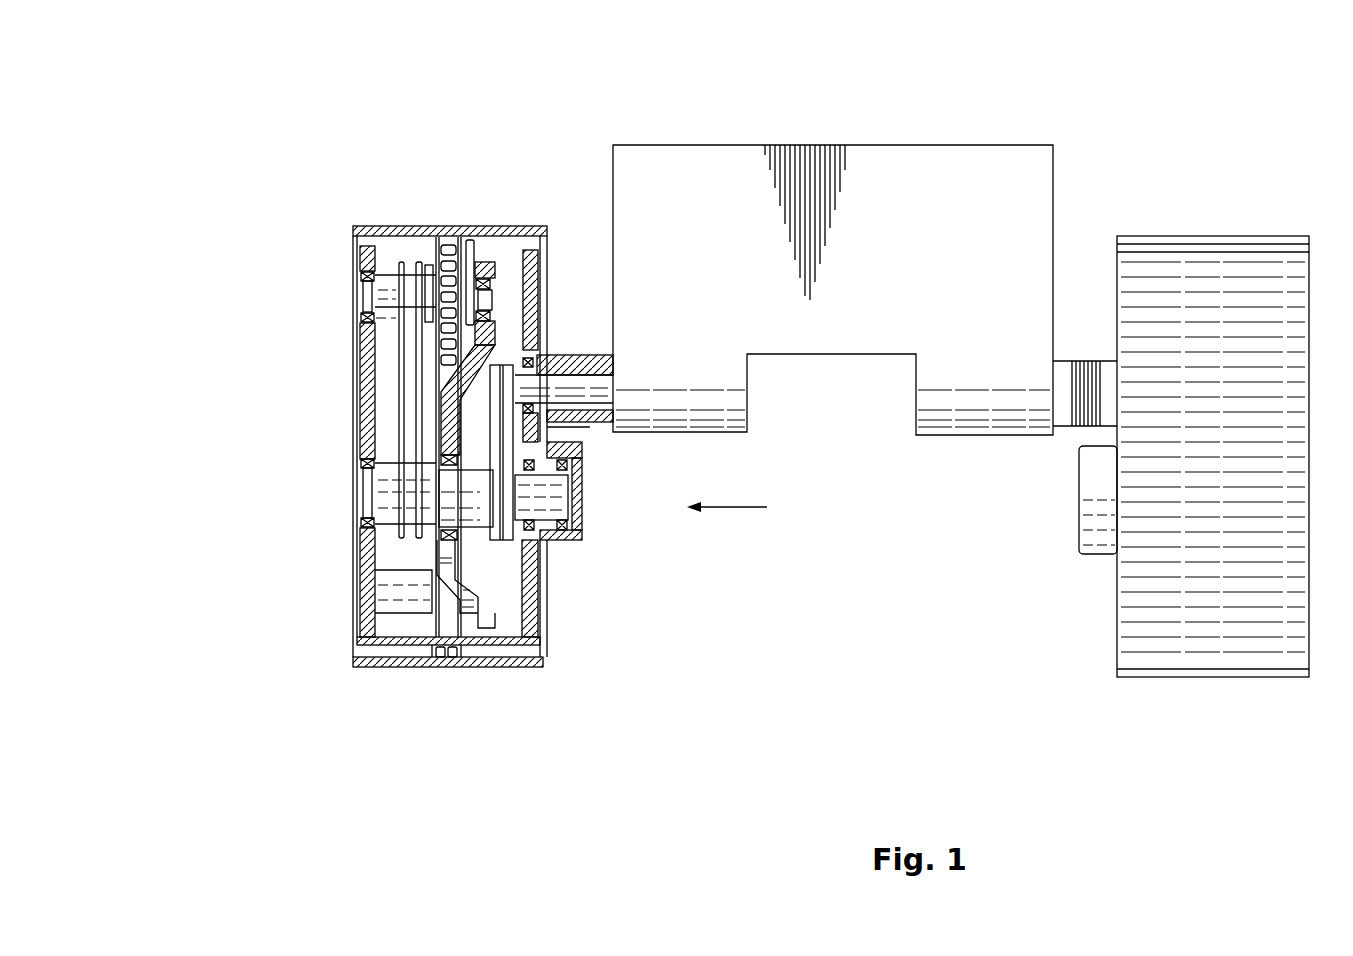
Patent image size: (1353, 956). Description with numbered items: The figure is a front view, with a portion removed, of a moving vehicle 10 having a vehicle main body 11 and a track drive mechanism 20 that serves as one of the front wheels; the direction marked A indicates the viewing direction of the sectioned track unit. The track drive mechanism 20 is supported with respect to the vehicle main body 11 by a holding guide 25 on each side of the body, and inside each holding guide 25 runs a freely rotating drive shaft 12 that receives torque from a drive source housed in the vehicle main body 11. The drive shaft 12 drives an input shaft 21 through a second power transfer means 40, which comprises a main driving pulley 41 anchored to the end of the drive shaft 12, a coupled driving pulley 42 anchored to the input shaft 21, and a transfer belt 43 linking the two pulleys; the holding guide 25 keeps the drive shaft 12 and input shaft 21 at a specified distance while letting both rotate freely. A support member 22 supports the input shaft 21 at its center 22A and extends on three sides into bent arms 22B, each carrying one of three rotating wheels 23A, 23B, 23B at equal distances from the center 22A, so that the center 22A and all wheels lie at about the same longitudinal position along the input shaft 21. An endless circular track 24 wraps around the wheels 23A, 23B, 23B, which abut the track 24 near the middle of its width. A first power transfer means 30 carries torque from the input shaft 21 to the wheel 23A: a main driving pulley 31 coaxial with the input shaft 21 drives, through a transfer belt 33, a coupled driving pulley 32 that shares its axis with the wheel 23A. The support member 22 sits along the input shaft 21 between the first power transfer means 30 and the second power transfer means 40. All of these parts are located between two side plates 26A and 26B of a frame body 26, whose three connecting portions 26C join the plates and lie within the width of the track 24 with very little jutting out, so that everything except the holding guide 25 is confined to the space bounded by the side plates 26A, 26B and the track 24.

The moving vehicle 10 is at (852, 534).
The vehicle main body 11 is at (905, 145).
The drive shaft 12 is at (556, 375).
The track drive mechanism 20 is at (338, 186).
The input shaft 21 is at (348, 548).
The support member 22 is at (700, 633).
The center of support member 22A is at (550, 603).
The arm 22B is at (537, 670).
The rotating wheel 23A is at (419, 226).
The rotating wheel 23B is at (448, 628).
The endless circular track 24 is at (393, 226).
The holding guide 25 is at (572, 355).
The frame body 26 is at (245, 653).
The side plate 26A is at (352, 610).
The side plate 26B is at (530, 236).
The connecting portion 26C is at (372, 672).
The first power transfer means 30 is at (272, 313).
The main driving pulley 31 is at (360, 438).
The coupled driving pulley 32 is at (360, 343).
The transfer belt 33 is at (360, 370).
The second power transfer means 40 is at (658, 560).
The main driving pulley 41 is at (583, 440).
The coupled driving pulley 42 is at (580, 553).
The transfer belt 43 is at (583, 486).
The direction A is at (740, 509).